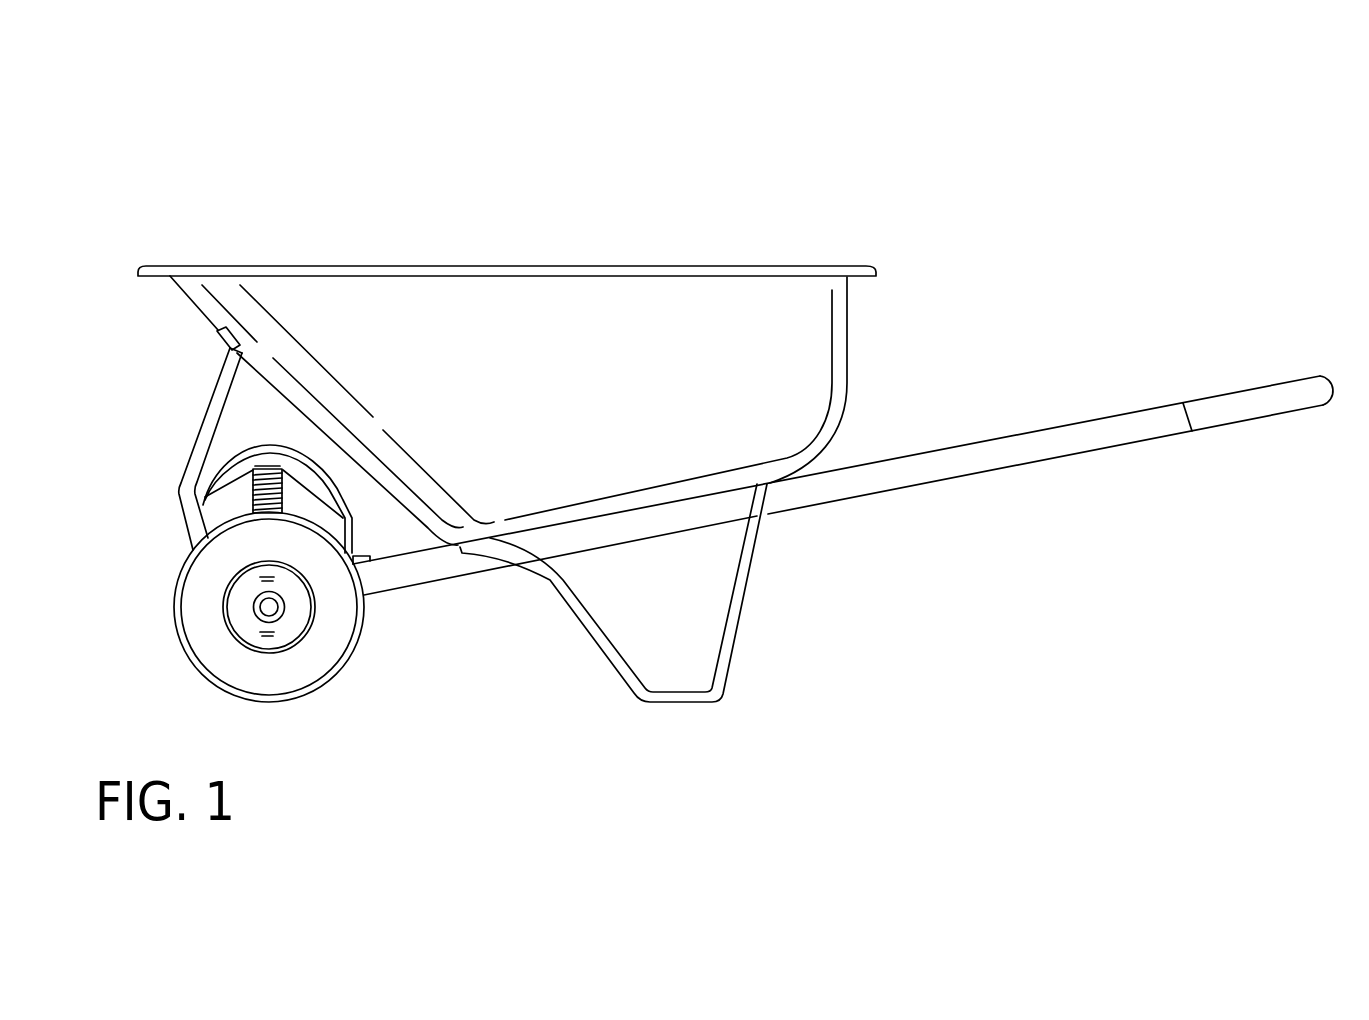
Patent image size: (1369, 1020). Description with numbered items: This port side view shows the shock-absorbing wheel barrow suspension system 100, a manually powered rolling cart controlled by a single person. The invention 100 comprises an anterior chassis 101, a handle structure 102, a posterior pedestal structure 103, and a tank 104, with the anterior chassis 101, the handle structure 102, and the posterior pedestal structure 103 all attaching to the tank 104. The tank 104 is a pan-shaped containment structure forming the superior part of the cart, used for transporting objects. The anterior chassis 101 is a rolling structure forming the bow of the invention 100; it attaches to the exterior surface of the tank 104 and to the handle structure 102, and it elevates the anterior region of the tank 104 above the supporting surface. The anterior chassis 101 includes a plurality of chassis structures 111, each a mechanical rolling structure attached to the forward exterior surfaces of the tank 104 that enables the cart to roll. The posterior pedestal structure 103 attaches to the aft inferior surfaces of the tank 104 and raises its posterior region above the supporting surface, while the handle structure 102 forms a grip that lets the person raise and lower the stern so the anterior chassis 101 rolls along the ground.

The shock-absorbing wheel barrow suspension system 100 is at (172, 137).
The anterior chassis 101 is at (168, 641).
The handle structure 102 is at (1082, 426).
The posterior pedestal structure 103 is at (737, 623).
The tank 104 is at (768, 270).
The chassis structure 111 is at (197, 452).